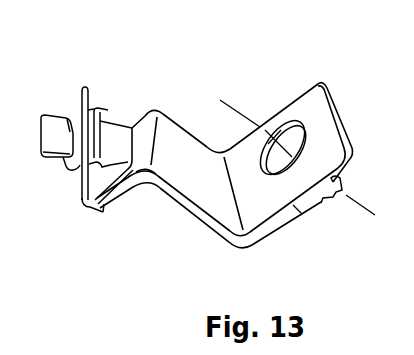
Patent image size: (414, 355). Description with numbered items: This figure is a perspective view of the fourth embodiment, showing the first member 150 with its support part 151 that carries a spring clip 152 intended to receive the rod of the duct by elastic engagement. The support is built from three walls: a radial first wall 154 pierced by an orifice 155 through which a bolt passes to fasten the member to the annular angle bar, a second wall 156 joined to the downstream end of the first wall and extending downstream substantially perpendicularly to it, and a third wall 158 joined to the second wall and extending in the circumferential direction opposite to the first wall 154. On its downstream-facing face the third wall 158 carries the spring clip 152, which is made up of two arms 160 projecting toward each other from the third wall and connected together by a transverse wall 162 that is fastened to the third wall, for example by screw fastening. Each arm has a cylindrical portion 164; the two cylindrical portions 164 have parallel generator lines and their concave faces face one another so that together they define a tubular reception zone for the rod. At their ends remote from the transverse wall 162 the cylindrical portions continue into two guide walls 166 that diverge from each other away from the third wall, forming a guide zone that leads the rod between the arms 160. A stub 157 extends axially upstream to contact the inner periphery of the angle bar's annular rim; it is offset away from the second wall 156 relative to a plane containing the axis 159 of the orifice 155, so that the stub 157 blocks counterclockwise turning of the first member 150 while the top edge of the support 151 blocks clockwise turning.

The first member 150 is at (230, 112).
The support part 151 is at (182, 125).
The spring clip 152 is at (72, 190).
The radial first wall 154 is at (297, 207).
The orifice 155 is at (271, 124).
The second wall 156 is at (184, 198).
The stub 157 is at (332, 193).
The third wall 158 is at (118, 198).
The axis of the orifice 159 is at (373, 213).
The arms 160 is at (110, 106).
The transverse wall 162 is at (100, 178).
The cylindrical portions 164 is at (98, 108).
The guide walls 166 is at (81, 108).